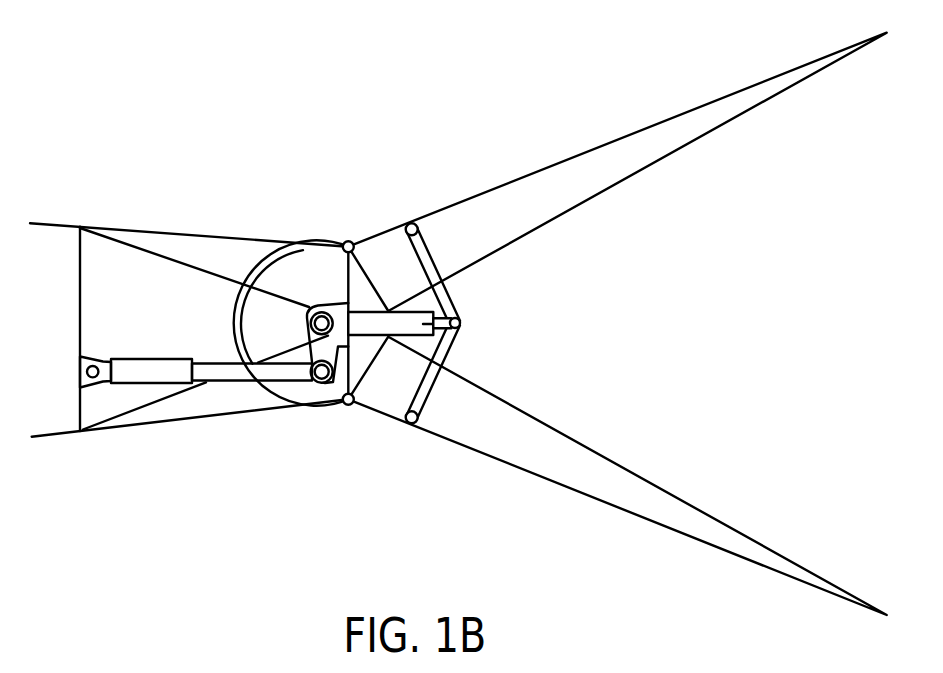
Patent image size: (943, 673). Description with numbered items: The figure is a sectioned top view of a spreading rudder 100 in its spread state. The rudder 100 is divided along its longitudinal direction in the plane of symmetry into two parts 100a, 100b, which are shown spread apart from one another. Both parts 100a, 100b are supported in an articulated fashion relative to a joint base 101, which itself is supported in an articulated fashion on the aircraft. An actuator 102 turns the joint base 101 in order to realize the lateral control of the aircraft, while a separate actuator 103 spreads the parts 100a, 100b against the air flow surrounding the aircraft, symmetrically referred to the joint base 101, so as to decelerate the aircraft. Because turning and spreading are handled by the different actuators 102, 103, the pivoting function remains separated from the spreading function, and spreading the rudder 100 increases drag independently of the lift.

The spreading rudder 100 is at (304, 502).
The first rudder part 100a is at (607, 157).
The second rudder part 100b is at (608, 492).
The joint base 101 is at (312, 250).
The actuator 102 is at (150, 379).
The actuator 103 is at (440, 323).